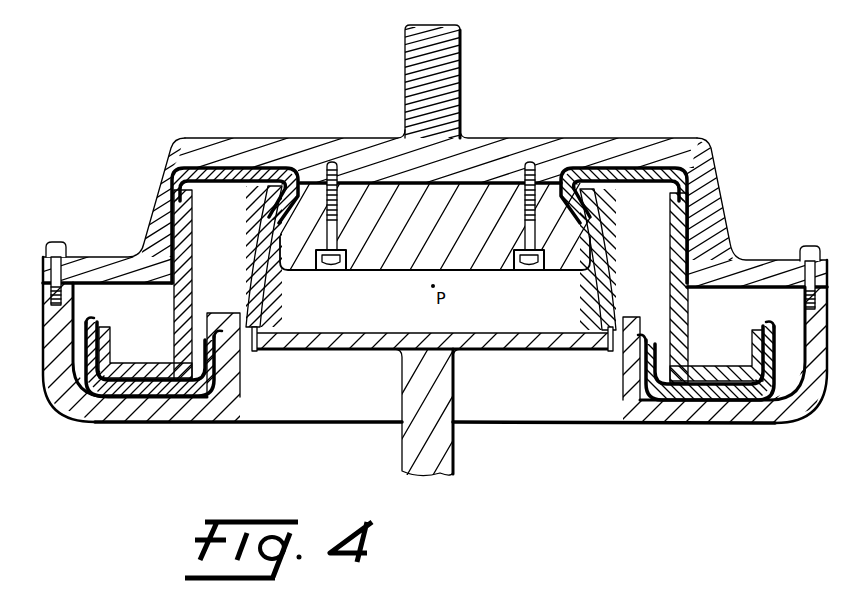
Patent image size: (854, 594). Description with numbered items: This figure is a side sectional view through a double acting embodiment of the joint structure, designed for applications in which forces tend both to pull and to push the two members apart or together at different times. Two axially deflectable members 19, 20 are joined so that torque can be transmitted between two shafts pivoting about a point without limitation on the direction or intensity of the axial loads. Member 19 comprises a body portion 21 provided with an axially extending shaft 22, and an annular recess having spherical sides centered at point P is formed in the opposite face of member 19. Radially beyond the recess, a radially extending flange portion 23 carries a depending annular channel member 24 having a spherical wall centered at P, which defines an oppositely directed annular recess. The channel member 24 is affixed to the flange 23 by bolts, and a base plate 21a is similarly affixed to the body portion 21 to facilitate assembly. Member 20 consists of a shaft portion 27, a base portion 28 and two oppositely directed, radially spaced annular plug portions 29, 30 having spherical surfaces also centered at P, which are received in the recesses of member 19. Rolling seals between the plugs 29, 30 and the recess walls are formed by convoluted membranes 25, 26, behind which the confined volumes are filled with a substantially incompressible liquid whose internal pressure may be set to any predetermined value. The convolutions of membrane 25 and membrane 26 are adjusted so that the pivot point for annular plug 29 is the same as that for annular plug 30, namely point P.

The axially deflectable member 19 is at (476, 70).
The axially deflectable member 20 is at (462, 461).
The body portion 21 is at (400, 138).
The base plate 21a is at (382, 274).
The axially extending shaft 22 is at (405, 72).
The radially extending flange portion 23 is at (118, 256).
The annular channel member 24 is at (62, 396).
The convoluted membrane 25 is at (162, 194).
The convoluted membrane 26 is at (80, 335).
The shaft portion 27 is at (403, 400).
The base portion 28 is at (342, 341).
The annular plug portion 29 is at (670, 212).
The annular plug portion 30 is at (707, 380).